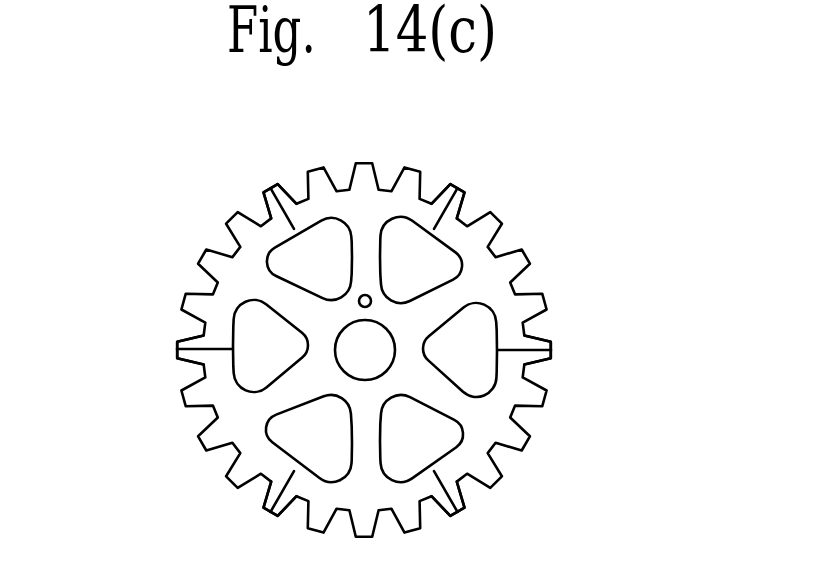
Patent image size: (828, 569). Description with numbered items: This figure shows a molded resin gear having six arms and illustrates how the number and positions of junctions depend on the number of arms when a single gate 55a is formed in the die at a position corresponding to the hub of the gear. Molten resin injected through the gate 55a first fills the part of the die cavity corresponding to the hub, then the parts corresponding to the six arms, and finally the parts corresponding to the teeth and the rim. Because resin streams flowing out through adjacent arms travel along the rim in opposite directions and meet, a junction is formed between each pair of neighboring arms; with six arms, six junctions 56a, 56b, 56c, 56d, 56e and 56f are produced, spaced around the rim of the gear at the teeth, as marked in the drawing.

The gate 55a is at (372, 294).
The junction 56a is at (430, 203).
The junction 56b is at (540, 342).
The junction 56c is at (440, 481).
The junction 56d is at (280, 490).
The junction 56e is at (204, 347).
The junction 56f is at (273, 200).